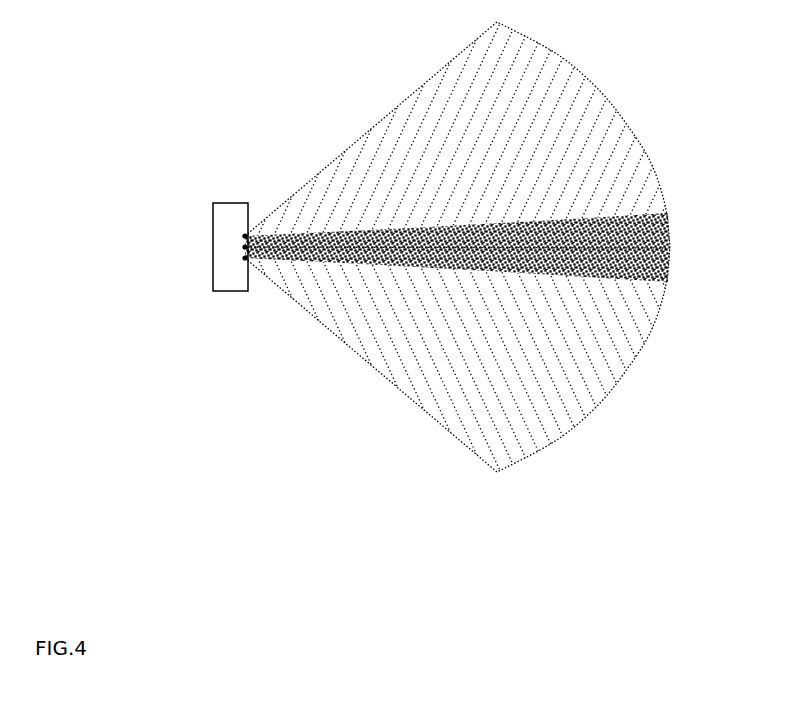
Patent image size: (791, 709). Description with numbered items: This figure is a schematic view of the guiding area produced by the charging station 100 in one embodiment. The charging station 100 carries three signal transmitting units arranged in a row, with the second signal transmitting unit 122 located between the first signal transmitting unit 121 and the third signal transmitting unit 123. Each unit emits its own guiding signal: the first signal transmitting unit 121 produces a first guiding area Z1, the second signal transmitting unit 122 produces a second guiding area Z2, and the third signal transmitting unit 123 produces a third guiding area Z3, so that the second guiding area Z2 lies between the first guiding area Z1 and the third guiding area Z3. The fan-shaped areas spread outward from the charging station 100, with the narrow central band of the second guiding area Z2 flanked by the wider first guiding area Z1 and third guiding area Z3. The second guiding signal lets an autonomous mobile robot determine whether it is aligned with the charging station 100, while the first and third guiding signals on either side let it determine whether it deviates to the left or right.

The charging station 100 is at (215, 186).
The first signal transmitting unit 121 is at (243, 236).
The second signal transmitting unit 122 is at (243, 247).
The third signal transmitting unit 123 is at (243, 258).
The first guiding area Z1 is at (270, 430).
The second guiding area Z2 is at (430, 353).
The third guiding area Z3 is at (270, 537).